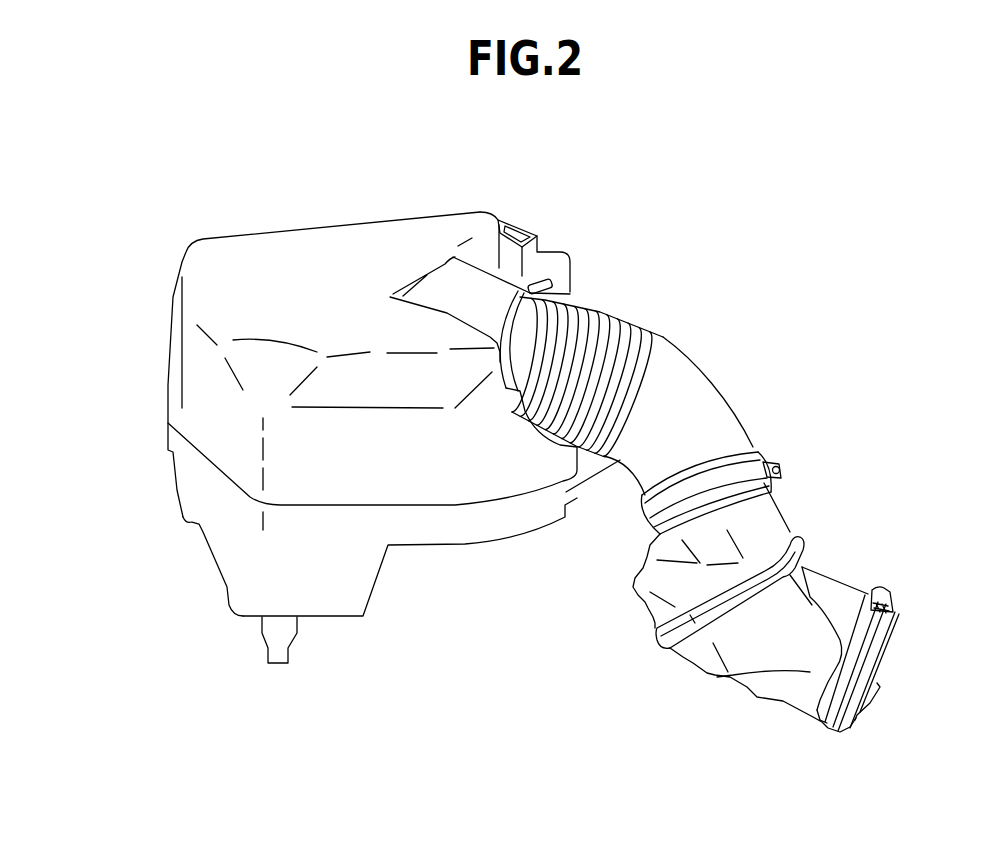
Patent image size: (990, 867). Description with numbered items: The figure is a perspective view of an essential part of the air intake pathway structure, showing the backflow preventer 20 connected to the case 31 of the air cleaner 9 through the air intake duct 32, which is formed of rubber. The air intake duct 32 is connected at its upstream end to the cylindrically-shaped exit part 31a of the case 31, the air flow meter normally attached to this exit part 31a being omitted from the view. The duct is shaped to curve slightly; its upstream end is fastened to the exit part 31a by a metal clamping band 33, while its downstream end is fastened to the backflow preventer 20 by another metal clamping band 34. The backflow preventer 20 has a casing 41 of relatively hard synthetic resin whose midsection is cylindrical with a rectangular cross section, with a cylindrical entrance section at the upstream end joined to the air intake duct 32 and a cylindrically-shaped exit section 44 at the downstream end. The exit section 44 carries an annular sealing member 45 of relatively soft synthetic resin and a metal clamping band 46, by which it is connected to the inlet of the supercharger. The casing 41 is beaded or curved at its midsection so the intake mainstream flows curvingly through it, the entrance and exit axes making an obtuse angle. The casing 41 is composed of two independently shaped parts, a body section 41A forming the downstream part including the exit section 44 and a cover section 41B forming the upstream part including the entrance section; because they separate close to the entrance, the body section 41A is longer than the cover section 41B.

The air cleaner 9 is at (193, 497).
The case 31 is at (311, 247).
The exit part 31a is at (502, 293).
The air intake duct 32 is at (693, 390).
The metal clamping band 33 is at (558, 283).
The metal clamping band 34 is at (750, 470).
The casing 41 is at (690, 607).
The body section 41A is at (683, 657).
The cover section 41B is at (652, 612).
The exit section 44 is at (883, 675).
The sealing member 45 is at (900, 638).
The metal clamping band 46 is at (823, 717).
The backflow preventer 20 is at (850, 578).